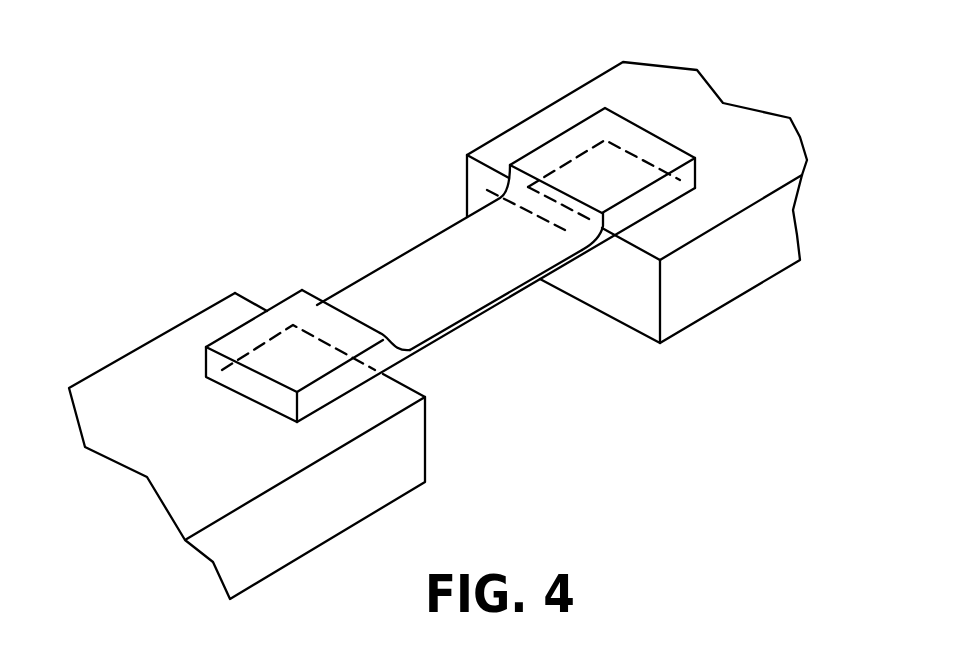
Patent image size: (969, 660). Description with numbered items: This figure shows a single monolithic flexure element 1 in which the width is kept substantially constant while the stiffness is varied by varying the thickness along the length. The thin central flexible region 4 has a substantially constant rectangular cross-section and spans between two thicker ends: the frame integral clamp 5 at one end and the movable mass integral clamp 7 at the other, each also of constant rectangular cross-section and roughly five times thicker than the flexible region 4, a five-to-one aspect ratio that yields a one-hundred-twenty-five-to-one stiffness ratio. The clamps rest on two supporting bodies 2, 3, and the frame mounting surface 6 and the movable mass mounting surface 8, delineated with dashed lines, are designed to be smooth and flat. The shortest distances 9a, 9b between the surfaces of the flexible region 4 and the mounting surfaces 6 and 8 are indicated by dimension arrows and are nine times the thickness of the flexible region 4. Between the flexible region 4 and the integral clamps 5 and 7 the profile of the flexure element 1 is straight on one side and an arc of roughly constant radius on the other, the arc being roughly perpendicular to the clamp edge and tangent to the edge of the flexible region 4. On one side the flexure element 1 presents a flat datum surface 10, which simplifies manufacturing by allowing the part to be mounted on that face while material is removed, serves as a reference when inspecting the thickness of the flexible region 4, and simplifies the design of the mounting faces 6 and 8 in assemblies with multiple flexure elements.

The monolithic flexure element 1 is at (412, 240).
The first substrate block 2 is at (148, 342).
The second substrate block 3 is at (543, 107).
The flexible region 4 is at (377, 268).
The frame integral clamp 5 is at (283, 300).
The frame mounting surface 6 is at (245, 352).
The movable mass integral clamp 7 is at (546, 166).
The movable mass mounting surface 8 is at (550, 174).
The shortest distance 9a is at (355, 403).
The shortest distance 9b is at (685, 210).
The datum surface 10 is at (482, 316).